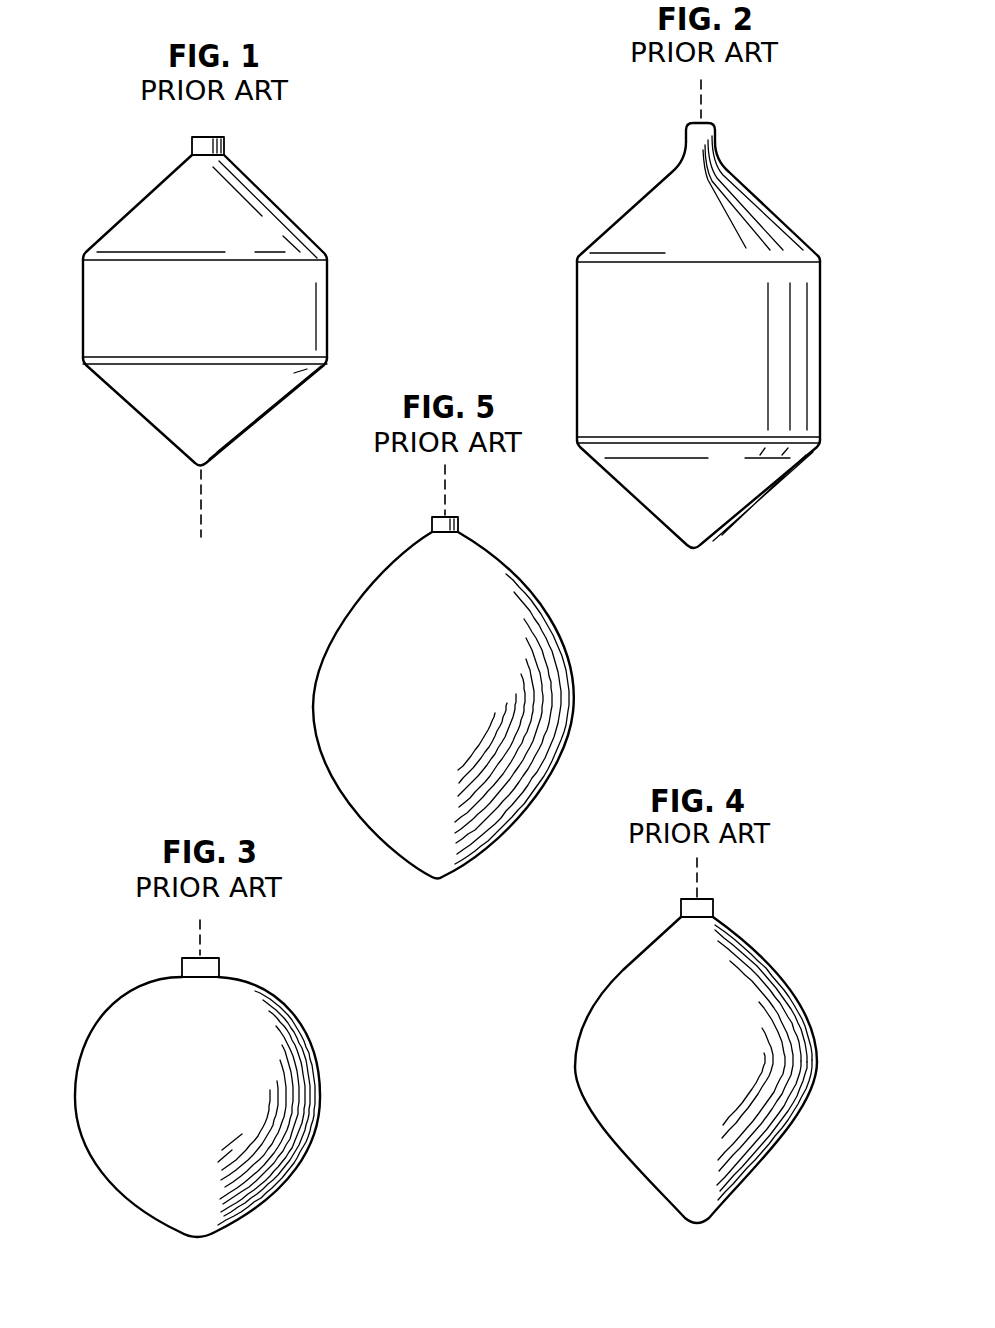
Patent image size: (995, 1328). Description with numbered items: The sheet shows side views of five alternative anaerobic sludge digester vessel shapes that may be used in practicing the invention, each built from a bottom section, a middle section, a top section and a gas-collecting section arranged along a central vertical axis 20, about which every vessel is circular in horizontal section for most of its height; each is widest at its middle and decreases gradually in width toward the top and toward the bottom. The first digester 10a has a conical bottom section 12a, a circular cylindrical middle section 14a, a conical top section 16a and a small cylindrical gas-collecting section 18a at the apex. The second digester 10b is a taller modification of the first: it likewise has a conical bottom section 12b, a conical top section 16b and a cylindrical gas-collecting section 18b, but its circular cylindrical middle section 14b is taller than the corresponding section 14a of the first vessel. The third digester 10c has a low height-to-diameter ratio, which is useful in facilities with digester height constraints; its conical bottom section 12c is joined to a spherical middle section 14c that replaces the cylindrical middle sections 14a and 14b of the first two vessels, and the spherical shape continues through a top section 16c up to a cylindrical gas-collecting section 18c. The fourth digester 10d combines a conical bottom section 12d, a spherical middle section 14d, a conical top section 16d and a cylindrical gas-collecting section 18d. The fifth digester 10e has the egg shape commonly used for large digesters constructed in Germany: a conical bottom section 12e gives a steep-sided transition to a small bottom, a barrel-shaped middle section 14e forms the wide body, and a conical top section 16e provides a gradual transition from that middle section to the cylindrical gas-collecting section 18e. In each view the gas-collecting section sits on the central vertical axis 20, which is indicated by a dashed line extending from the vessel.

In FIG. 1, the digester 10a is at (244, 299).
In FIG. 1, the conical bottom section 12a is at (258, 432).
In FIG. 1, the circular cylindrical middle section 14a is at (330, 303).
In FIG. 1, the conical top section 16a is at (147, 197).
In FIG. 1, the cylindrical gas-collecting section 18a is at (226, 148).
In FIG. 2, the digester 10b is at (691, 322).
In FIG. 2, the conical bottom section 12b is at (775, 484).
In FIG. 2, the circular cylindrical middle section 14b is at (577, 291).
In FIG. 2, the conical top section 16b is at (760, 197).
In FIG. 2, the cylindrical gas-collecting section 18b is at (685, 140).
In FIG. 3, the digester 10c is at (212, 1096).
In FIG. 3, the conical bottom section 12c is at (118, 1185).
In FIG. 3, the spherical middle section 14c is at (320, 1110).
In FIG. 3, the top section 16c is at (101, 1021).
In FIG. 3, the cylindrical gas-collecting section 18c is at (181, 962).
In FIG. 4, the digester 10d is at (696, 1057).
In FIG. 4, the conical bottom section 12d is at (774, 1152).
In FIG. 4, the spherical middle section 14d is at (575, 1073).
In FIG. 4, the conical top section 16d is at (622, 970).
In FIG. 4, the cylindrical gas-collecting section 18d is at (715, 906).
In FIG. 5, the digester 10e is at (429, 698).
In FIG. 5, the conical bottom section 12e is at (489, 851).
In FIG. 5, the barrel-shaped middle section 14e is at (566, 760).
In FIG. 5, the conical top section 16e is at (548, 608).
In FIG. 5, the cylindrical gas-collecting section 18e is at (431, 525).
In FIG. 1, the central vertical axis 20 is at (200, 484).
In FIG. 2, the central vertical axis 20 is at (700, 96).
In FIG. 5, the central vertical axis 20 is at (443, 477).
In FIG. 3, the central vertical axis 20 is at (198, 932).
In FIG. 4, the central vertical axis 20 is at (696, 874).